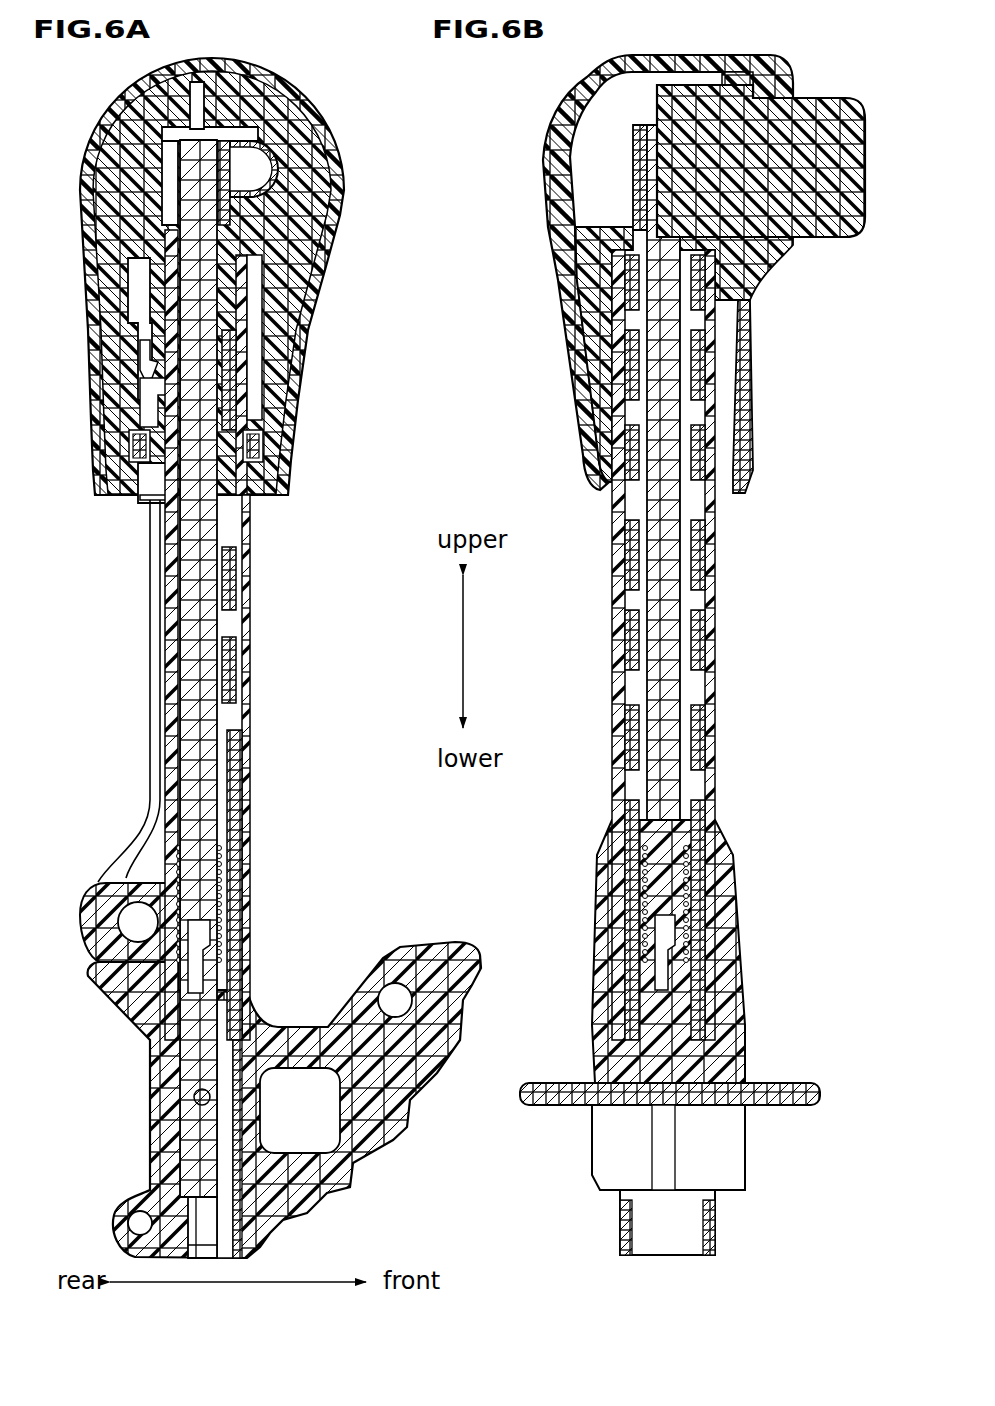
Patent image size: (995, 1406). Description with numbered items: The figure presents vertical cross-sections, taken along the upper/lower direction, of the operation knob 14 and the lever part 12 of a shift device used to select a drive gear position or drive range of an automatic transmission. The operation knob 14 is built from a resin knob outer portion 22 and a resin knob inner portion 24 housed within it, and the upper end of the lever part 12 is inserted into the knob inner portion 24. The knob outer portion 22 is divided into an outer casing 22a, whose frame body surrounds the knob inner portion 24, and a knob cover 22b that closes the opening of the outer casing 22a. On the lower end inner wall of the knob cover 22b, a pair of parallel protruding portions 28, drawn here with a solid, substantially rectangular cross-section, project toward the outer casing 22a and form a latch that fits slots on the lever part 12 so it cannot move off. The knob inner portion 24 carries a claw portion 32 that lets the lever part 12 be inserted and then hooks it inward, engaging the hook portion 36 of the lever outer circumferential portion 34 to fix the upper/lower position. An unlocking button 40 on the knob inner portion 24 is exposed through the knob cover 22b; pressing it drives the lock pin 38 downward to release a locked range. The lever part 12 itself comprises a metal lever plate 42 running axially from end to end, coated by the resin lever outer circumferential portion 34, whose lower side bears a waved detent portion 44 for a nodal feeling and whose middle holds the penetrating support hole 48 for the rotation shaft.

In FIG. 6A, the lever part 12 is at (140, 659).
In FIG. 6A, the operation knob 14 is at (322, 333).
In FIG. 6A, the knob outer portion 22 is at (242, 265).
In FIG. 6B, the knob outer portion 22 is at (668, 250).
In FIG. 6A, the outer casing 22a is at (272, 77).
In FIG. 6B, the outer casing 22a is at (560, 117).
In FIG. 6B, the knob cover 22b is at (781, 74).
In FIG. 6A, the knob inner portion 24 is at (290, 217).
In FIG. 6B, the knob inner portion 24 is at (587, 254).
In FIG. 6A, the protruding portions 28 is at (130, 444).
In FIG. 6A, the claw portion 32 is at (146, 391).
In FIG. 6A, the lever outer circumferential portion 34 is at (255, 886).
In FIG. 6B, the lever outer circumferential portion 34 is at (742, 885).
In FIG. 6A, the hook portion 36 is at (146, 358).
In FIG. 6A, the lock pin 38 is at (203, 633).
In FIG. 6B, the lock pin 38 is at (675, 590).
In FIG. 6B, the unlocking button 40 is at (835, 237).
In FIG. 6A, the lever plate 42 is at (235, 812).
In FIG. 6B, the lever plate 42 is at (702, 733).
In FIG. 6A, the detent portion 44 is at (393, 1141).
In FIG. 6A, the support hole 48 is at (125, 924).